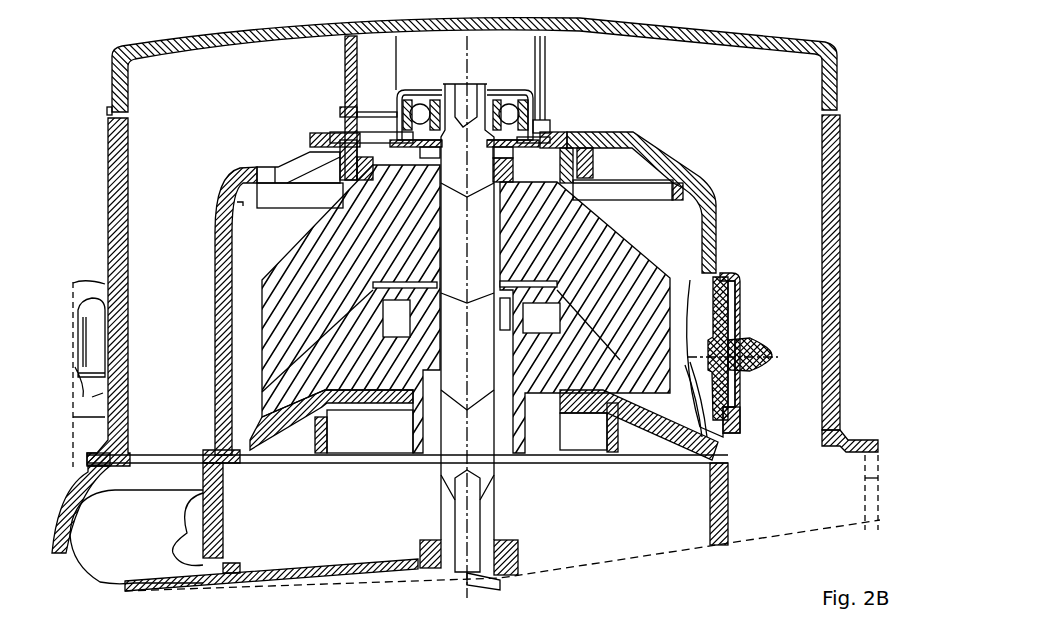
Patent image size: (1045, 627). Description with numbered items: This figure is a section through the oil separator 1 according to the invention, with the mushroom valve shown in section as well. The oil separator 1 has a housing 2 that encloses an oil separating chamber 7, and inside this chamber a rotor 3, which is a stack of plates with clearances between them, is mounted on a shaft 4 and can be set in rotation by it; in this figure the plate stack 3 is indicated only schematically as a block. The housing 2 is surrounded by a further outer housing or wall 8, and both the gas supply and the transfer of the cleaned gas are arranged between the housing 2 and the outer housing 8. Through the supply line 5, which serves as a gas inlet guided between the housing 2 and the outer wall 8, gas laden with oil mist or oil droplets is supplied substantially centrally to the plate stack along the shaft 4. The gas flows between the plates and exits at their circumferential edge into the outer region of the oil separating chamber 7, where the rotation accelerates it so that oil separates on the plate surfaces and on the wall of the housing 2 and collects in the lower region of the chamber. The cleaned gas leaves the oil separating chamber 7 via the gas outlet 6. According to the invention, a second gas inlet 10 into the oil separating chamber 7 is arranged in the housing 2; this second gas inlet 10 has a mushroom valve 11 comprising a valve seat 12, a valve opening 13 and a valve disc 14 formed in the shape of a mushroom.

The oil separator 1 is at (522, 313).
The housing 2 is at (713, 213).
The rotor (plate stack) 3 is at (533, 262).
The shaft 4 is at (448, 262).
The supply line 5 is at (730, 107).
The gas outlet 6 is at (300, 162).
The oil separating chamber 7 is at (236, 319).
The outer housing/wall 8 is at (115, 163).
The second gas inlet 10 is at (731, 316).
The mushroom valve 11 is at (746, 344).
The valve seat 12 is at (742, 431).
The valve opening 13 is at (731, 398).
The valve disc 14 is at (714, 337).